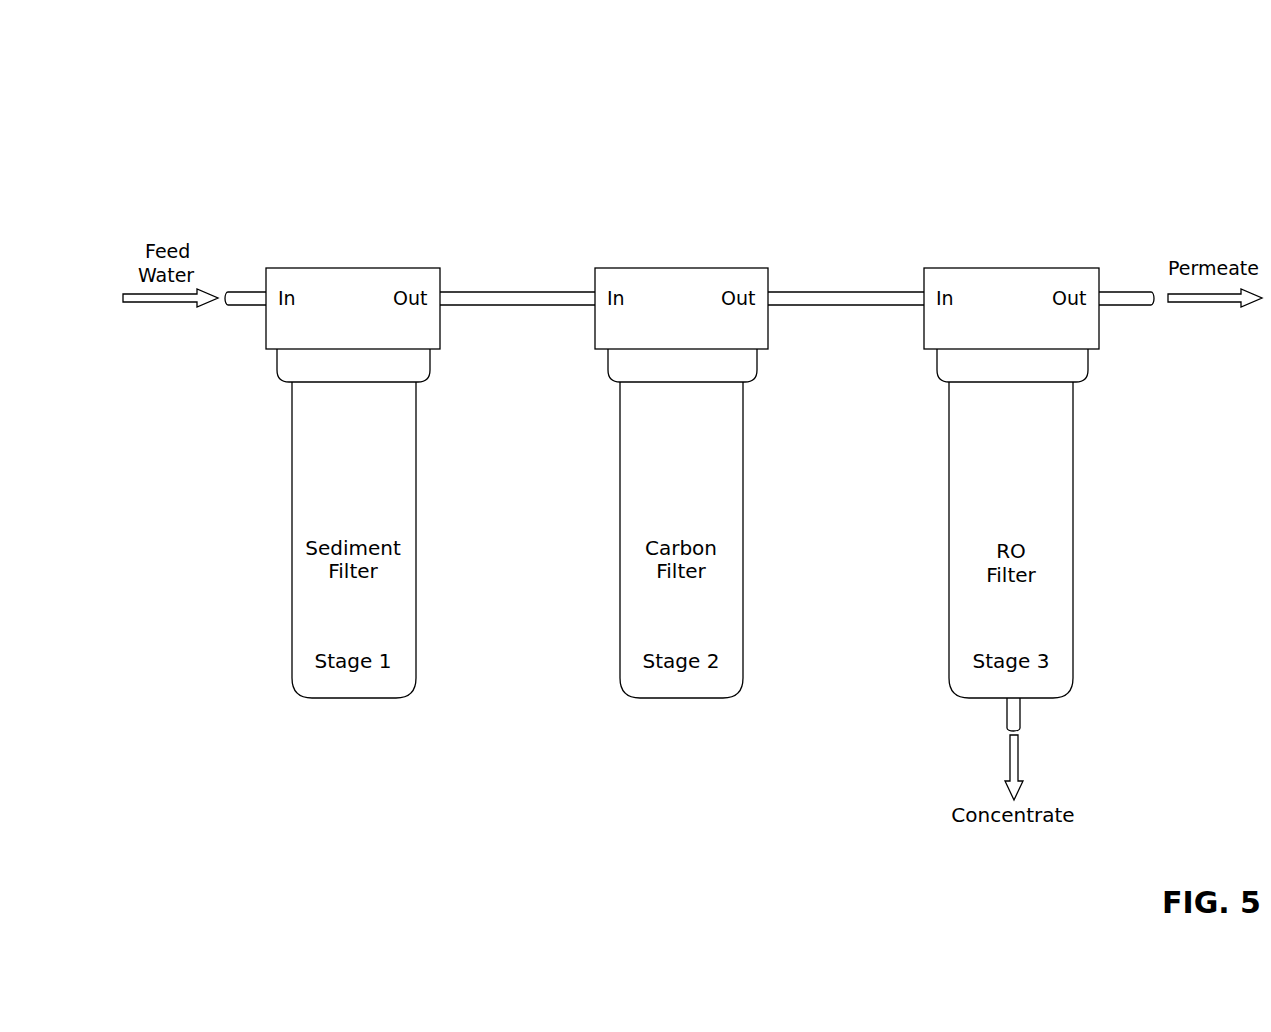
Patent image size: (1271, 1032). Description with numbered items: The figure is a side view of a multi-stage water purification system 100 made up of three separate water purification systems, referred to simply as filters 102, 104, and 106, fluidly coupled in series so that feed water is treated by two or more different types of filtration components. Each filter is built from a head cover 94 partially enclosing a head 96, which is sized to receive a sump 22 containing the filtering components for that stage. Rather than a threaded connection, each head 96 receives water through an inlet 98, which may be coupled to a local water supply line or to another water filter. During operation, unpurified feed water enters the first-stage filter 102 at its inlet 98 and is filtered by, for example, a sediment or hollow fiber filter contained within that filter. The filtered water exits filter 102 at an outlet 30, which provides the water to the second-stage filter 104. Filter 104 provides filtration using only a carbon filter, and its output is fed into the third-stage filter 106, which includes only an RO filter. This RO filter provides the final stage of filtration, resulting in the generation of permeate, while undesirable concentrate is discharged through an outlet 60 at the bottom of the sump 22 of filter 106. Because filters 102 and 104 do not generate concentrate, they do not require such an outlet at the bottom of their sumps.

The multi-stage water purification system 100 is at (1147, 118).
The filter 102 is at (450, 268).
The filter 104 is at (777, 267).
The filter 106 is at (1108, 266).
The head cover 94 is at (352, 268).
The head 96 is at (284, 362).
The inlet 98 is at (262, 306).
The outlet 30 is at (445, 307).
The sump 22 is at (292, 477).
The outlet 60 is at (1021, 716).